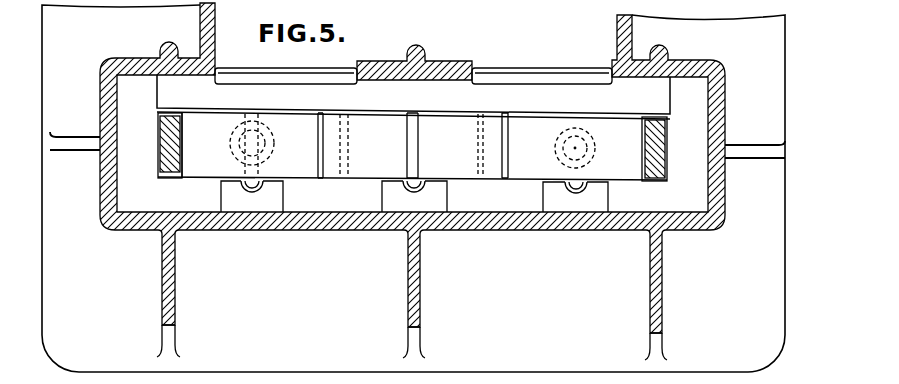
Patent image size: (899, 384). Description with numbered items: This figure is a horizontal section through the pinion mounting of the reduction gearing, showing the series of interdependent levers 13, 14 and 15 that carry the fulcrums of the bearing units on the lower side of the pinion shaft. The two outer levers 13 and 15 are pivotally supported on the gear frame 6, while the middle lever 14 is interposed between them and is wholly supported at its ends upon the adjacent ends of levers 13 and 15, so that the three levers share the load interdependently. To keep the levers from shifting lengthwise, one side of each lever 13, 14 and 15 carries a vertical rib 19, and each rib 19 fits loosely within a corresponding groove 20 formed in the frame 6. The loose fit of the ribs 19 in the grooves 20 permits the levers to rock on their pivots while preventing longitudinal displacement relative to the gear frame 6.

The gear frame 6 is at (413, 188).
The lever 13 is at (252, 145).
The lever 14 is at (379, 145).
The lever 15 is at (536, 145).
The vertical rib 19 is at (265, 183).
The grooves 20 is at (243, 185).